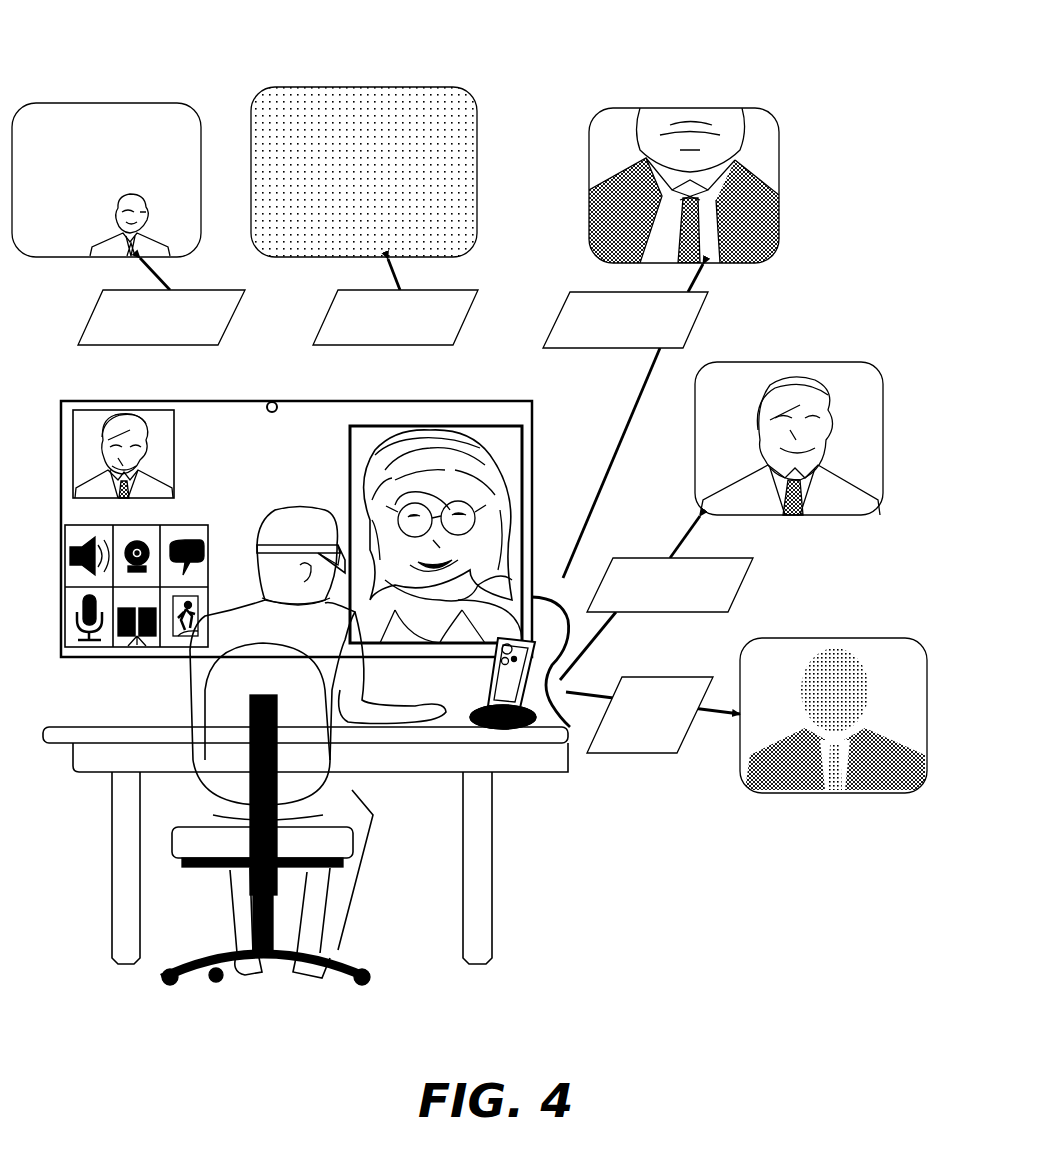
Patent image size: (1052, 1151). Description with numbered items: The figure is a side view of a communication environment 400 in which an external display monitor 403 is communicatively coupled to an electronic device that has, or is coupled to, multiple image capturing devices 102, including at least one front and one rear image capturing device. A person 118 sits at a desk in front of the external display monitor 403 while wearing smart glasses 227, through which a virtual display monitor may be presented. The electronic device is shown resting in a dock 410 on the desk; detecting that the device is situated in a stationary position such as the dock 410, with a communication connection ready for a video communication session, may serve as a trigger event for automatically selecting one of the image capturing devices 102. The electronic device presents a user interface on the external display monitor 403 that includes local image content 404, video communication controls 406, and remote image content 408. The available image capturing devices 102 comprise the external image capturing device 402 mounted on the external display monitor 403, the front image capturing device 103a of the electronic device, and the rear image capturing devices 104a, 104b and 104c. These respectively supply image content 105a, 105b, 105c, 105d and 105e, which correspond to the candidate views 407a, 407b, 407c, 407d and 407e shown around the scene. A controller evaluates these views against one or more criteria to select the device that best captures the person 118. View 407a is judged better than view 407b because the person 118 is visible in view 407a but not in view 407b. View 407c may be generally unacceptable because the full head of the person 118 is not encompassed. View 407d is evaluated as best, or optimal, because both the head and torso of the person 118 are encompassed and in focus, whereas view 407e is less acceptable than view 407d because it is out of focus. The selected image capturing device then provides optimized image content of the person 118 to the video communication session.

The communication environment 400 is at (86, 46).
The view 407a is at (142, 103).
The view 407b is at (390, 87).
The view 407c is at (589, 178).
The view 407d is at (822, 362).
The view 407e is at (853, 638).
The image content 105a is at (161, 301).
The image content 105b is at (395, 302).
The image content 105c is at (625, 421).
The image content 105d is at (656, 598).
The image content 105e is at (653, 715).
The external image capturing device 402 is at (272, 402).
The external display monitor 403 is at (61, 430).
The local image content 404 is at (73, 488).
The video communication controls 406 is at (72, 520).
The remote image content 408 is at (495, 428).
The smart glasses 227 is at (268, 540).
The person 118 is at (372, 665).
The image capturing devices 102 is at (548, 656).
The front image capturing device 103a is at (540, 645).
The rear image capturing device 104a is at (498, 650).
The rear image capturing device 104b is at (500, 665).
The rear image capturing device 104c is at (520, 712).
The dock 410 is at (485, 722).